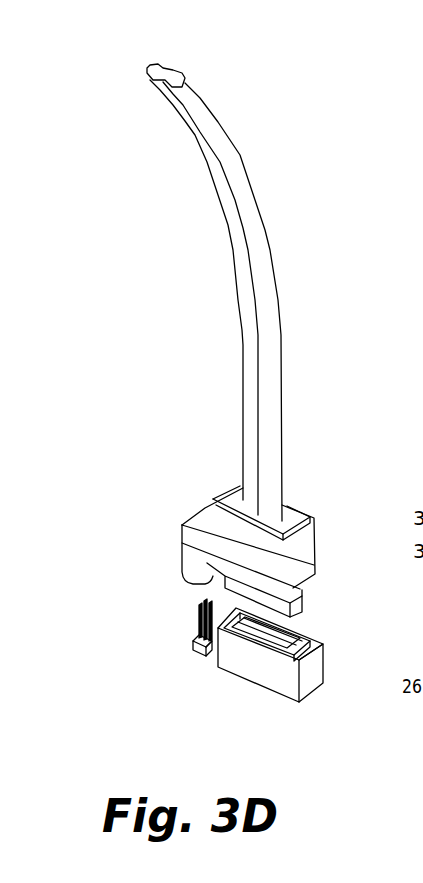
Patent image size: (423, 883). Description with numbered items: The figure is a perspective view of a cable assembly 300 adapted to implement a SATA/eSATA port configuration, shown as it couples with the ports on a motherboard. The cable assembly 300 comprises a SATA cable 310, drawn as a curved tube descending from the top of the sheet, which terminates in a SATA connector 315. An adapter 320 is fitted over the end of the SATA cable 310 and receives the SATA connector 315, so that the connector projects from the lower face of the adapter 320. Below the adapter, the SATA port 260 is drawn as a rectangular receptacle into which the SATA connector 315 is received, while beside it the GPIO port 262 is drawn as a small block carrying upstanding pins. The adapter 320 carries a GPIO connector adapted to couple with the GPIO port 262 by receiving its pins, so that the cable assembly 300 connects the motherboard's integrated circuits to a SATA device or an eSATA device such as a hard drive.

The cable assembly 300 is at (60, 24).
The SATA cable 310 is at (245, 230).
The adapter 320 is at (253, 562).
The SATA connector 315 is at (290, 603).
The SATA port 260 is at (260, 664).
The GPIO port 262 is at (200, 649).